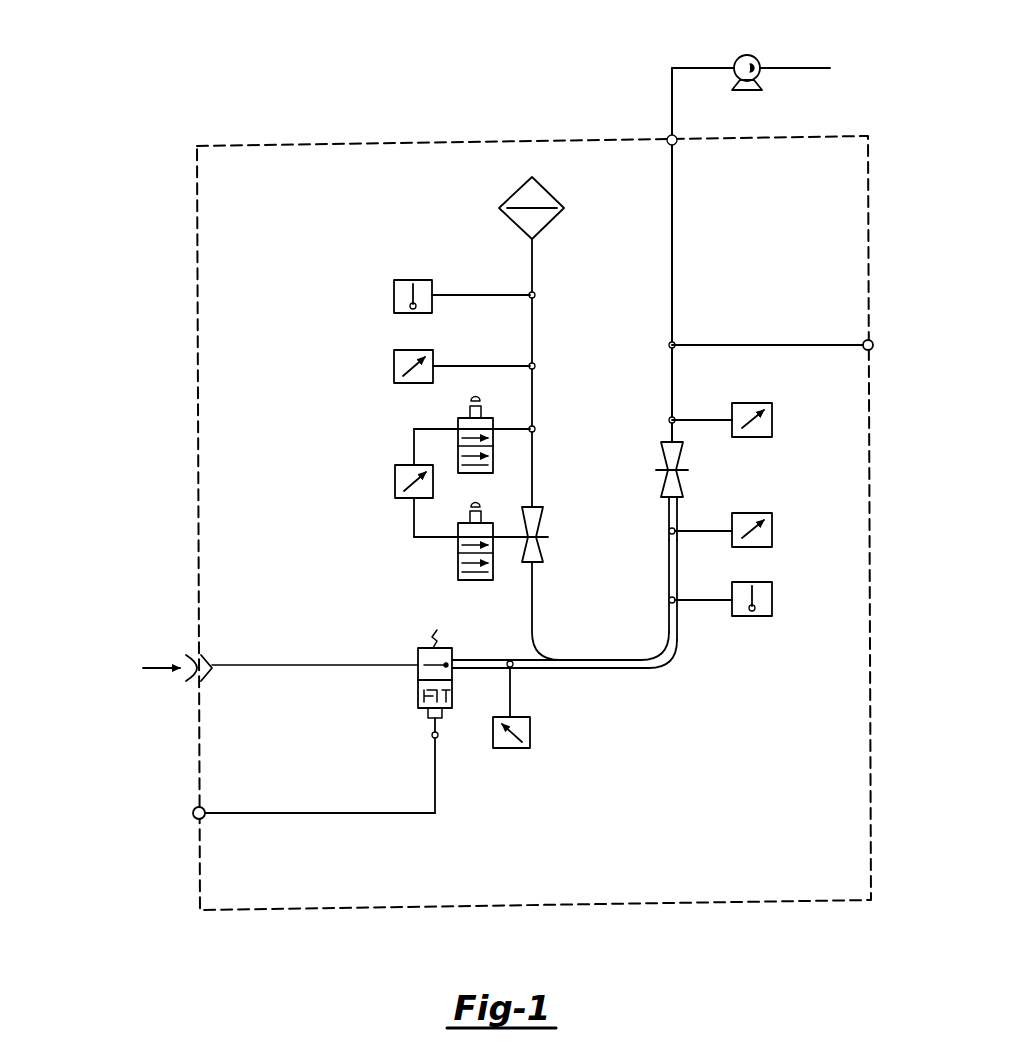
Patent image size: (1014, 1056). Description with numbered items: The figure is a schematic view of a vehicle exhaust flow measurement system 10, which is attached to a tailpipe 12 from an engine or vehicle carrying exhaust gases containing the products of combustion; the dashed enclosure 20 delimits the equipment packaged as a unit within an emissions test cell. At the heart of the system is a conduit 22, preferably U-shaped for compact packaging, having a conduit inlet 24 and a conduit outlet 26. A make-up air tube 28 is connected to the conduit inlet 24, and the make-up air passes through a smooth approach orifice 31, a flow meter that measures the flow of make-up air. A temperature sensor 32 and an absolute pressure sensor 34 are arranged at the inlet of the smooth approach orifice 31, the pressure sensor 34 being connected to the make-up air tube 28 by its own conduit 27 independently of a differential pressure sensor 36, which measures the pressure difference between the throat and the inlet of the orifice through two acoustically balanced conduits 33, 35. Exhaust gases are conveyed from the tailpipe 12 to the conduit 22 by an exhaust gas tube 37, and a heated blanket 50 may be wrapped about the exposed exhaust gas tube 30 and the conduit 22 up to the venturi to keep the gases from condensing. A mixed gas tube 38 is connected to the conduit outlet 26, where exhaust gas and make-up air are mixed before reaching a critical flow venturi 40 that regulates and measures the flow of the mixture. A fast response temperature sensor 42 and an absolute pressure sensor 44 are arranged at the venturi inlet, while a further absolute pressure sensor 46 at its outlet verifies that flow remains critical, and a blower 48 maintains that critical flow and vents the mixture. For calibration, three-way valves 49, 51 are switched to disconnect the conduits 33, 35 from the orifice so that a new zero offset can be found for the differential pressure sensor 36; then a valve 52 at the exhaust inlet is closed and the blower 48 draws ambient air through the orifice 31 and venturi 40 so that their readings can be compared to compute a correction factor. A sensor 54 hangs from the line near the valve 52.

The exhaust flow measurement system 10 is at (485, 459).
The tailpipe 12 is at (190, 662).
The housing enclosure 20 is at (872, 713).
The conduit 22 is at (652, 670).
The conduit inlet 24 is at (532, 618).
The conduit outlet 26 is at (638, 568).
The conduit 27 is at (465, 366).
The make-up air tube 28 is at (532, 395).
The exhaust gas tube 30 is at (547, 192).
The smooth approach orifice 31 is at (545, 518).
The temperature sensor 32 is at (394, 295).
The conduit 33 is at (427, 427).
The absolute pressure sensor 34 is at (394, 364).
The conduit 35 is at (427, 540).
The pressure sensor 36 is at (395, 482).
The exhaust gas tube 37 is at (474, 669).
The mixed gas tube 38 is at (668, 506).
The critical flow venturi 40 is at (684, 490).
The fast response temperature sensor 42 is at (772, 600).
The absolute pressure sensor 44 is at (772, 527).
The absolute pressure sensor 46 is at (772, 419).
The blower 48 is at (755, 58).
The three-way valve 49 is at (484, 420).
The heated blanket 50 is at (590, 657).
The three-way valve 51 is at (462, 580).
The valve 52 is at (418, 657).
The pressure sensor 54 is at (512, 748).